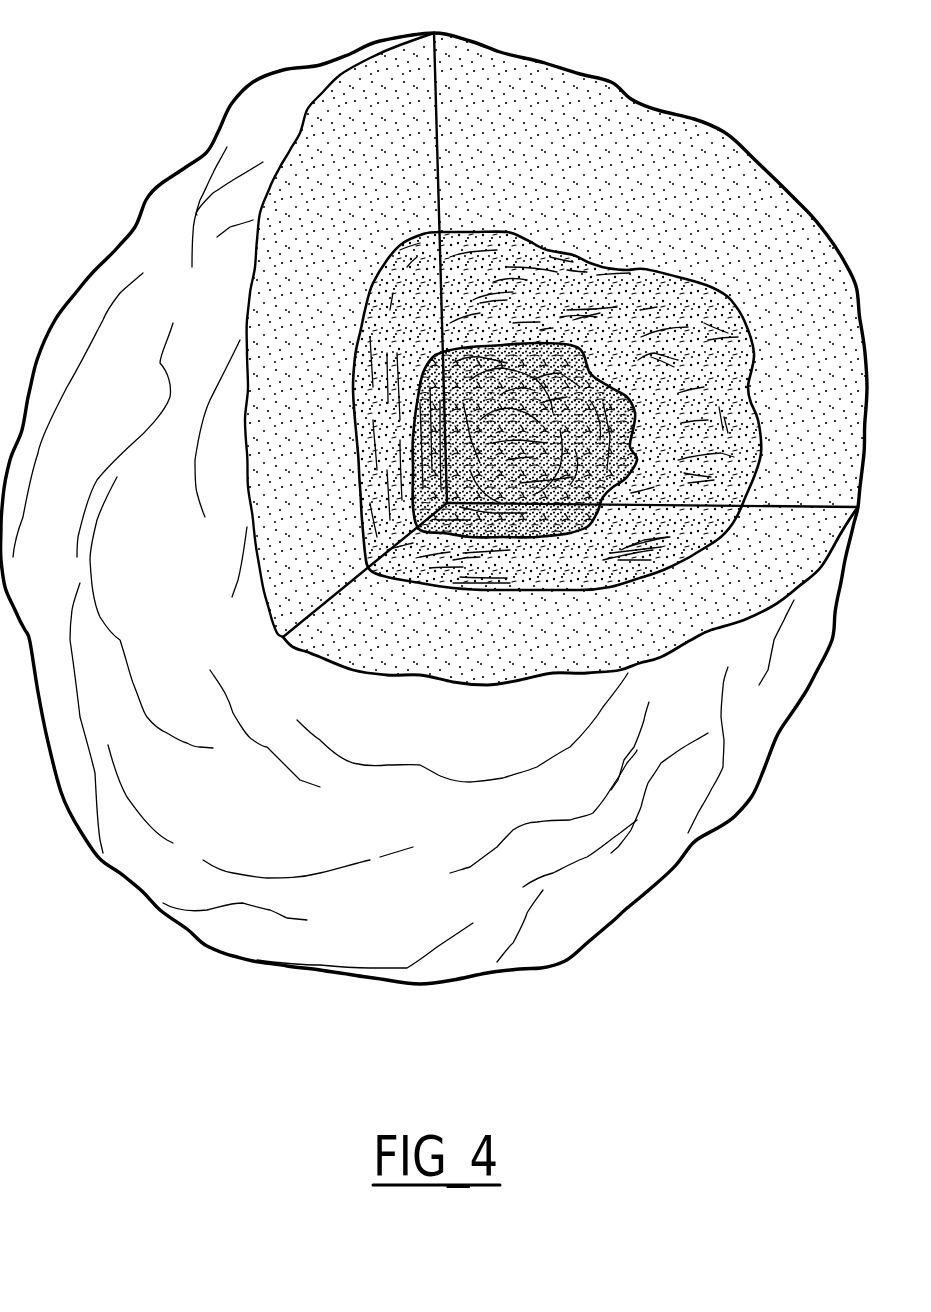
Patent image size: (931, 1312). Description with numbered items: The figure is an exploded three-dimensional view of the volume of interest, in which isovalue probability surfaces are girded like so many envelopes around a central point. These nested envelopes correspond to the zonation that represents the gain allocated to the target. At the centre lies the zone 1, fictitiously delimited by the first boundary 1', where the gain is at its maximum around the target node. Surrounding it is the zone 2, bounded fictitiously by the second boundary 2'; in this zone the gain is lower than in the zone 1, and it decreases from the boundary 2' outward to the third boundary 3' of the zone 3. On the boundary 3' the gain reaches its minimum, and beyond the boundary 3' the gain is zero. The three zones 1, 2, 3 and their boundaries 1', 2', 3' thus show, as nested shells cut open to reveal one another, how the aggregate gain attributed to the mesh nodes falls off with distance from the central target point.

The zone 1 is at (610, 440).
The zone 2 is at (557, 388).
The zone 3 is at (434, 508).
The first boundary 1' is at (635, 388).
The second boundary 2' is at (522, 487).
The third boundary 3' is at (556, 374).